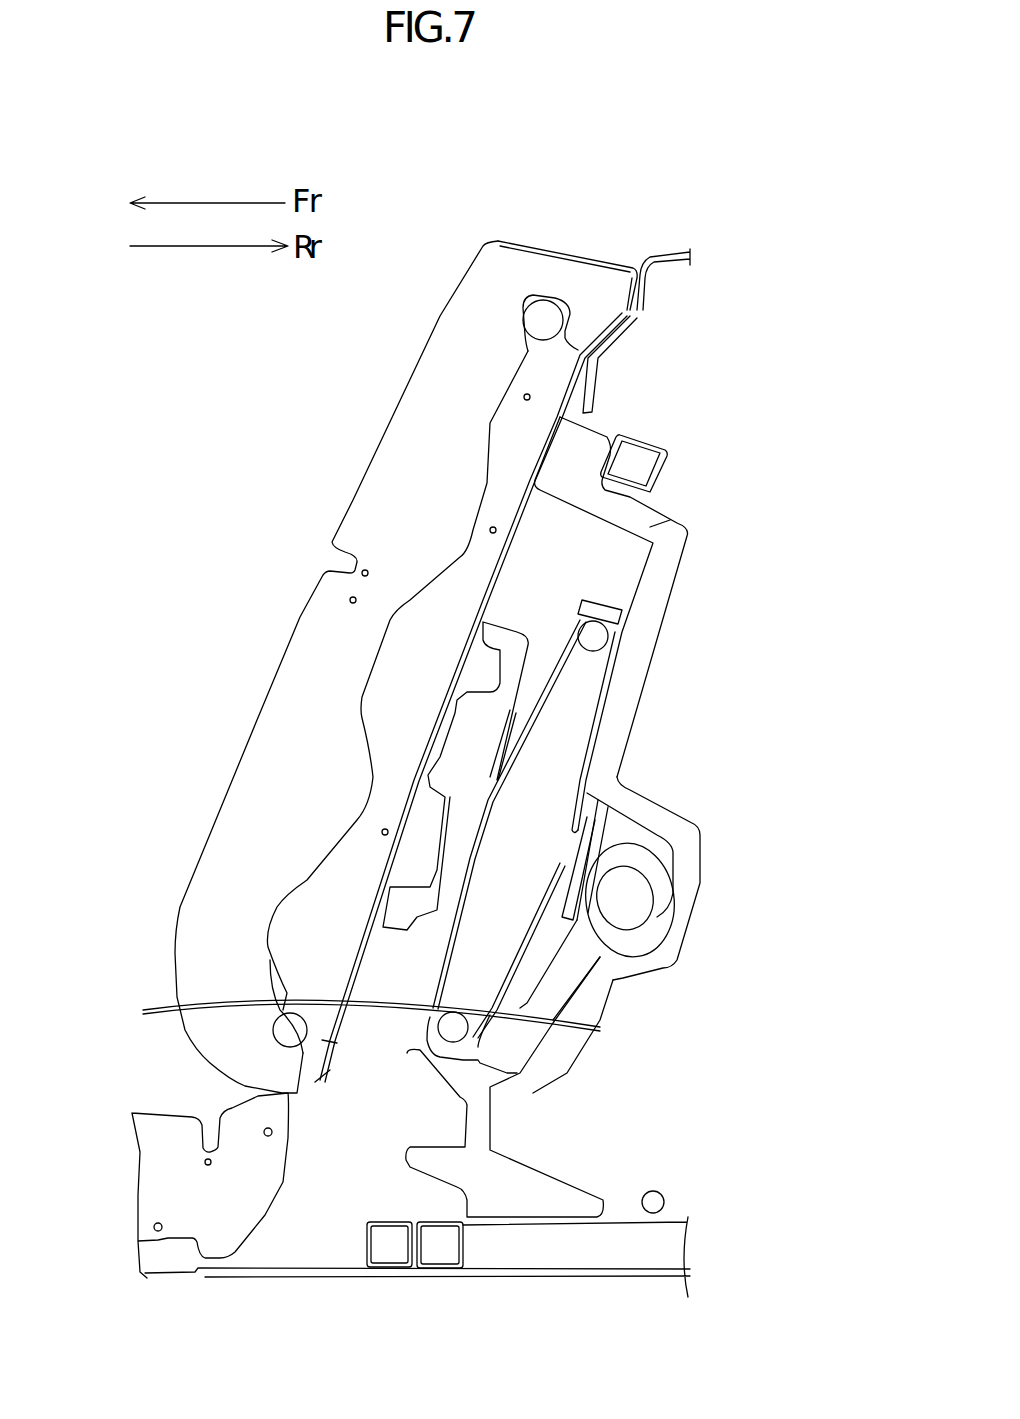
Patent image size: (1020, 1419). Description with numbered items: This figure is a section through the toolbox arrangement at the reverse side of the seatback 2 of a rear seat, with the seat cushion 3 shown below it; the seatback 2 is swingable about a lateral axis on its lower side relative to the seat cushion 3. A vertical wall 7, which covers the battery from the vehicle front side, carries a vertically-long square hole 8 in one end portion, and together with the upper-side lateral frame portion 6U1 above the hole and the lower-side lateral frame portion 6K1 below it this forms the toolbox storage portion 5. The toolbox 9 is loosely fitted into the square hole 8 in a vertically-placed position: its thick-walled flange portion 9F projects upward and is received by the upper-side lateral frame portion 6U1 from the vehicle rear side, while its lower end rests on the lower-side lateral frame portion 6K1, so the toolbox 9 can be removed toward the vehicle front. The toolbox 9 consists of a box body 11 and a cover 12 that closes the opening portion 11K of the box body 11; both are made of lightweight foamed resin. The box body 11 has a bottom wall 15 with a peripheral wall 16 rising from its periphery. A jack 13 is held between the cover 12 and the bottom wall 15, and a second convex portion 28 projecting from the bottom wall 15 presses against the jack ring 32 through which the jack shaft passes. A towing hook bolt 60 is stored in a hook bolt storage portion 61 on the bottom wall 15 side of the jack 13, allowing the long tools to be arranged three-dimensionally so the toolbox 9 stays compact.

The seatback 2 is at (375, 483).
The seat cushion 3 is at (168, 1123).
The toolbox storage portion 5 is at (490, 593).
The vertical wall 7 is at (590, 383).
The square hole 8 is at (580, 412).
The toolbox 9 is at (701, 772).
The thick-walled flange portion 9F is at (590, 440).
The upper-side lateral frame portion 6U1 is at (642, 440).
The lower-side lateral frame portion 6K1 is at (368, 1255).
The box body 11 is at (727, 567).
The opening portion 11K is at (498, 569).
The cover 12 is at (425, 762).
The jack 13 is at (581, 758).
The bottom wall 15 is at (617, 703).
The peripheral wall 16 is at (650, 527).
The second convex portion 28 is at (625, 612).
The jack ring 32 is at (590, 605).
The towing hook bolt 60 is at (597, 933).
The hook bolt storage portion 61 is at (640, 835).